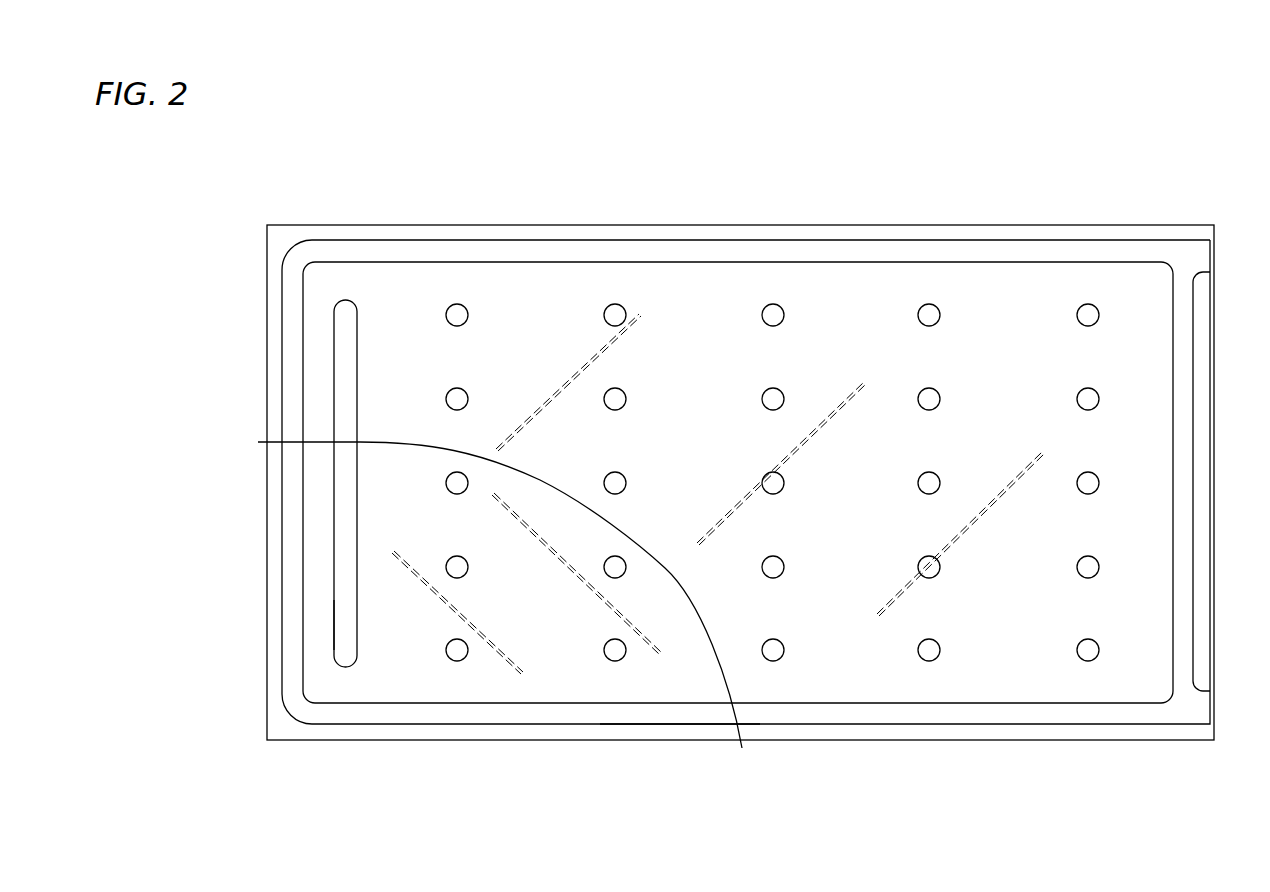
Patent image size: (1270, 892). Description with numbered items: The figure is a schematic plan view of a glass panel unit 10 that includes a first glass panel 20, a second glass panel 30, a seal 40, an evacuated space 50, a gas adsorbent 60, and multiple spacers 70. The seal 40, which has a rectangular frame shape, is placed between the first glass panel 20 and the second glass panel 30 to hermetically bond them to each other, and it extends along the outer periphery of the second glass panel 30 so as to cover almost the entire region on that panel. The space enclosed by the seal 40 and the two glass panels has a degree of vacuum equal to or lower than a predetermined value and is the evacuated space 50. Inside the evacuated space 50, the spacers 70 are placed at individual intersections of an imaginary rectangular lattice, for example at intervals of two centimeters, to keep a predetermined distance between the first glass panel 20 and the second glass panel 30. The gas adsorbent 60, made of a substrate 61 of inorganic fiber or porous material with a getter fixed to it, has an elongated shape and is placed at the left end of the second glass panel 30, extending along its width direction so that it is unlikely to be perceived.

The glass panel unit 10 is at (1205, 220).
The first glass panel 20 is at (1092, 230).
The second glass panel 30 is at (683, 735).
The seal 40 is at (691, 254).
The evacuated space 50 is at (557, 667).
The gas adsorbent 60 is at (347, 521).
The substrate 61 is at (347, 623).
The spacers 70 is at (932, 318).